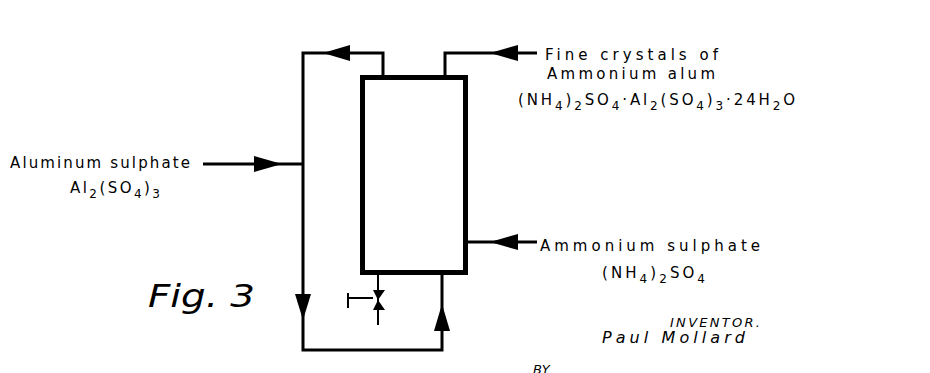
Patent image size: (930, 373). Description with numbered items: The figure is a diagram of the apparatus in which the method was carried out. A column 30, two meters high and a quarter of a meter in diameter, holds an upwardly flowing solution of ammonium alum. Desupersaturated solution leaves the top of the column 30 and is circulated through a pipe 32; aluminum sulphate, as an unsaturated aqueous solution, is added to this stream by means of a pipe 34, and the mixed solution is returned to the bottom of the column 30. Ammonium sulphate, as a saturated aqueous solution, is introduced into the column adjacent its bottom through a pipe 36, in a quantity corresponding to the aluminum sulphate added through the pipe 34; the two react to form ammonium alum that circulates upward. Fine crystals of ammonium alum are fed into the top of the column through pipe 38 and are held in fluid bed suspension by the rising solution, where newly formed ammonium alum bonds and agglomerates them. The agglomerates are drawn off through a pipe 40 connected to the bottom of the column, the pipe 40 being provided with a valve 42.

The column 30 is at (468, 163).
The pipe 32 is at (303, 83).
The pipe 34 is at (217, 167).
The pipe 36 is at (474, 246).
The pipe 38 is at (465, 53).
The pipe 40 is at (372, 322).
The valve 42 is at (358, 296).